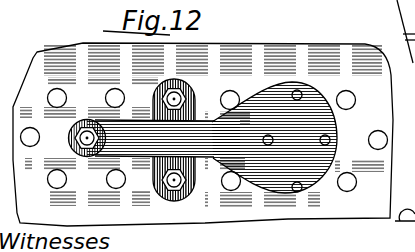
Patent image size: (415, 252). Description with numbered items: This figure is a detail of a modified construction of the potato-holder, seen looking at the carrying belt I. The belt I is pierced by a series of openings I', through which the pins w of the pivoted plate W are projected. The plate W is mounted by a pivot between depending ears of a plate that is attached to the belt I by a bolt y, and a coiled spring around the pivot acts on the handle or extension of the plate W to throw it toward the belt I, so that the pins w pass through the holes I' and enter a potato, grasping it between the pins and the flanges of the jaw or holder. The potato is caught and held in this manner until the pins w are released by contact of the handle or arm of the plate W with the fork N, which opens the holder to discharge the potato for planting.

The belt I is at (203, 134).
The openings in the belt I' is at (204, 135).
The bolt y is at (89, 139).
The plate W is at (196, 127).
The fork N is at (274, 137).
The pins w is at (267, 141).